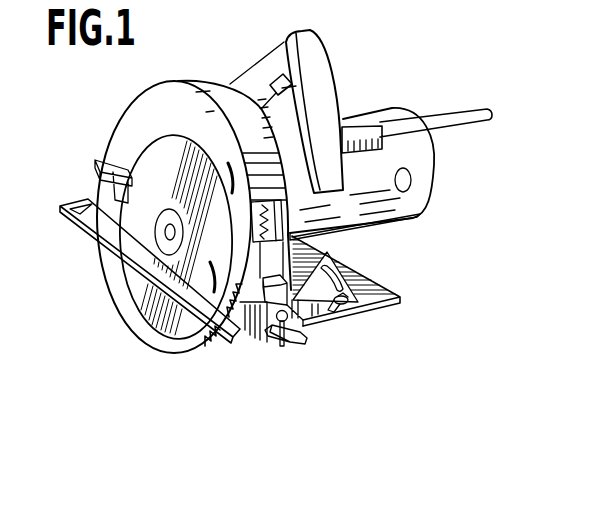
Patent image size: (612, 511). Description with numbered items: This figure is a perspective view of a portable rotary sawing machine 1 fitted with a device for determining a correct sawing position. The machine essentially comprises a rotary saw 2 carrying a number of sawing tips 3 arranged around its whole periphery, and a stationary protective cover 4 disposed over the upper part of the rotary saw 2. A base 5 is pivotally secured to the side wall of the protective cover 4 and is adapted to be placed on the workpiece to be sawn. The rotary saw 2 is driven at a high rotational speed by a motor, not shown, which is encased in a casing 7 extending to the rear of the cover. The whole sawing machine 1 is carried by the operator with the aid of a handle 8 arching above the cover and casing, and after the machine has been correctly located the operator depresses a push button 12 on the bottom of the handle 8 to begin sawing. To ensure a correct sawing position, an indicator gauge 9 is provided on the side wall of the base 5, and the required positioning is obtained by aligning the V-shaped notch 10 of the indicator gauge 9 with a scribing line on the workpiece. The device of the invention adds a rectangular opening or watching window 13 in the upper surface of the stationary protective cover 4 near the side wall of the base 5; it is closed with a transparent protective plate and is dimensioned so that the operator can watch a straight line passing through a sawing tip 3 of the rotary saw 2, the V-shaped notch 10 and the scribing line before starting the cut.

The portable rotary sawing machine 1 is at (121, 300).
The rotary saw 2 is at (155, 324).
The sawing tips 3 is at (230, 333).
The stationary protective cover 4 is at (118, 118).
The base 5 is at (372, 290).
The casing 7 is at (420, 170).
The handle 8 is at (321, 99).
The indicator gauge 9 is at (284, 347).
The V-shaped notch 10 is at (293, 340).
The push button 12 is at (278, 82).
The rectangular opening or watching window 13 is at (345, 232).